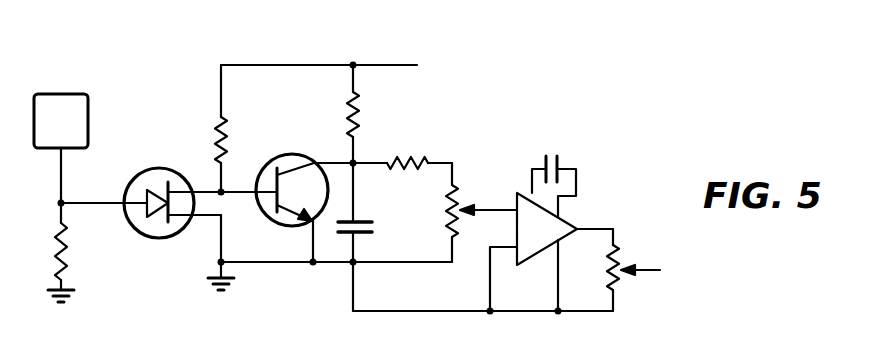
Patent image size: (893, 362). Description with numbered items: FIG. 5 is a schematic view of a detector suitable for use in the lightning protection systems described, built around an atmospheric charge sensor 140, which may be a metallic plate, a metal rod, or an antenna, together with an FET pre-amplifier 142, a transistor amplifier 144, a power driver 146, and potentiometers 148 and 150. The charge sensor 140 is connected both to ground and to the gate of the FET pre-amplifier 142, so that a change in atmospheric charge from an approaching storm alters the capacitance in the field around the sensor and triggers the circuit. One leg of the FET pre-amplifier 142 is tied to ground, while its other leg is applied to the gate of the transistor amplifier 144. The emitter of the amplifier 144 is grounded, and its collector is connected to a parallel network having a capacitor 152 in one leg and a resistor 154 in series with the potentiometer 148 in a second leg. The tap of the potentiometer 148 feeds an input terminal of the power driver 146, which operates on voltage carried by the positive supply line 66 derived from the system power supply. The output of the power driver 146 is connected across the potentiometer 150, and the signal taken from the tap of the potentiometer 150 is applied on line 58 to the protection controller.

The atmospheric charge sensor 140 is at (45, 131).
The FET pre-amplifier 142 is at (166, 238).
The transistor amplifier 144 is at (285, 226).
The V+ supply line 66 is at (388, 63).
The capacitor 152 is at (376, 230).
The resistor 154 is at (413, 160).
The potentiometer 148 is at (463, 190).
The power driver 146 is at (537, 262).
The potentiometer 150 is at (618, 283).
The line 58 is at (642, 268).